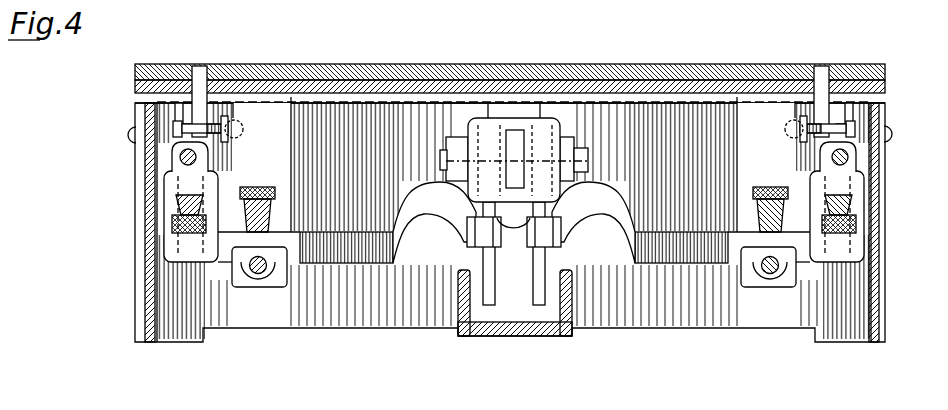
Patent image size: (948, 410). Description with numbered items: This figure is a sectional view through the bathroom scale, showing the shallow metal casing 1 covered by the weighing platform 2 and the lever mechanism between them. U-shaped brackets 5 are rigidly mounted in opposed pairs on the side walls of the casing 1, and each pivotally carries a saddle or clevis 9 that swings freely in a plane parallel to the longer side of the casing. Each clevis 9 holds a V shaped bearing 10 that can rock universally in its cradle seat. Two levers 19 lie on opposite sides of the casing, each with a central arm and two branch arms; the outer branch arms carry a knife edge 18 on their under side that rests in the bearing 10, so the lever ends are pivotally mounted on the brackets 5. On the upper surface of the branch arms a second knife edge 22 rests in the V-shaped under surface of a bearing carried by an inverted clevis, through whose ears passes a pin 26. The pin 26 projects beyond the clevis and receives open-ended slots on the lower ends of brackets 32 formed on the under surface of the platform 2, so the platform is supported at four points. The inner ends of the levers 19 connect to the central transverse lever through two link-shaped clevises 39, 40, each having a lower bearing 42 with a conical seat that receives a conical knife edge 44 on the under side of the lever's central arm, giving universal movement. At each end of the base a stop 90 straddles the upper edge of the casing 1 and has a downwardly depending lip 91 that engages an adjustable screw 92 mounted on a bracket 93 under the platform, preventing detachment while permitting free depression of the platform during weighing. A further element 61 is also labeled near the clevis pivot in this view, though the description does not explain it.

The casing 1 is at (137, 296).
The weighing platform 2 is at (818, 66).
The brackets 5 is at (152, 182).
The saddle 9 is at (173, 236).
The V shaped bearing 10 is at (173, 224).
The knife edge 18 is at (175, 208).
The levers 19 is at (358, 252).
The knife edge 22 is at (270, 218).
The pin 26 is at (256, 272).
The brackets 32 is at (258, 110).
The clevis 39 is at (486, 248).
The clevis 40 is at (535, 268).
The bearing 42 is at (470, 239).
The conical knife edge 44 is at (470, 208).
The pivot pin 61 is at (198, 148).
The stop 90 is at (137, 153).
The downwardly depending lip 91 is at (179, 108).
The screw 92 is at (178, 130).
The bracket 93 is at (201, 96).